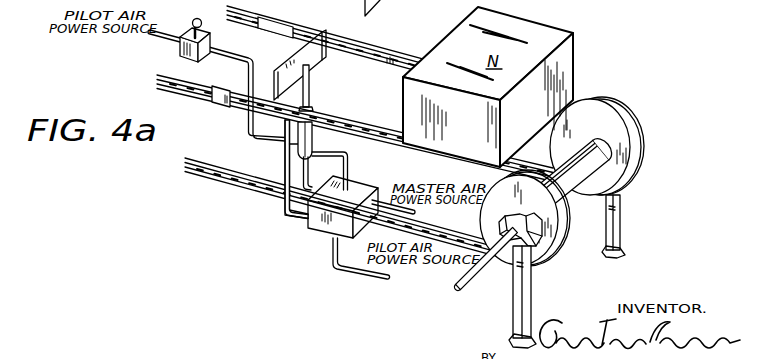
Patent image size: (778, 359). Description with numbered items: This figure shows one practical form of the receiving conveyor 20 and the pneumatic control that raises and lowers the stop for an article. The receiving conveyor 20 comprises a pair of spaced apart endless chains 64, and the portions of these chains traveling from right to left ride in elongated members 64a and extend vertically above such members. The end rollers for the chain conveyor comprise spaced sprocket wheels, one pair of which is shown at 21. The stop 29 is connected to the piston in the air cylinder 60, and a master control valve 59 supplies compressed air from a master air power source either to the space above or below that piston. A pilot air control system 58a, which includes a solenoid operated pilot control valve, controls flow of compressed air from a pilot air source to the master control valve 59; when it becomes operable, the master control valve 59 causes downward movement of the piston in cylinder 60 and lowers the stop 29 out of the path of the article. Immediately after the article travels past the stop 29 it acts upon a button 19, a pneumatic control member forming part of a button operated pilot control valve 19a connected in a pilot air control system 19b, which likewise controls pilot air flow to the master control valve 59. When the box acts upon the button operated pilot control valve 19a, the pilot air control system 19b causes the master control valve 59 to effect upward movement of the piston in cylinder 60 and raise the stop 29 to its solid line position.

The button 19 is at (194, 18).
The button operated pilot control valve 19a is at (178, 49).
The pilot air control system 19b is at (350, 166).
The receiving conveyor 20 is at (611, 184).
The sprocket wheels 21 is at (563, 256).
The stop 29 is at (289, 58).
The pilot air control system 58a is at (365, 270).
The master control valve 59 is at (318, 219).
The air cylinder 60 is at (298, 144).
The endless chains 64 is at (393, 38).
The elongated members 64a is at (380, 62).